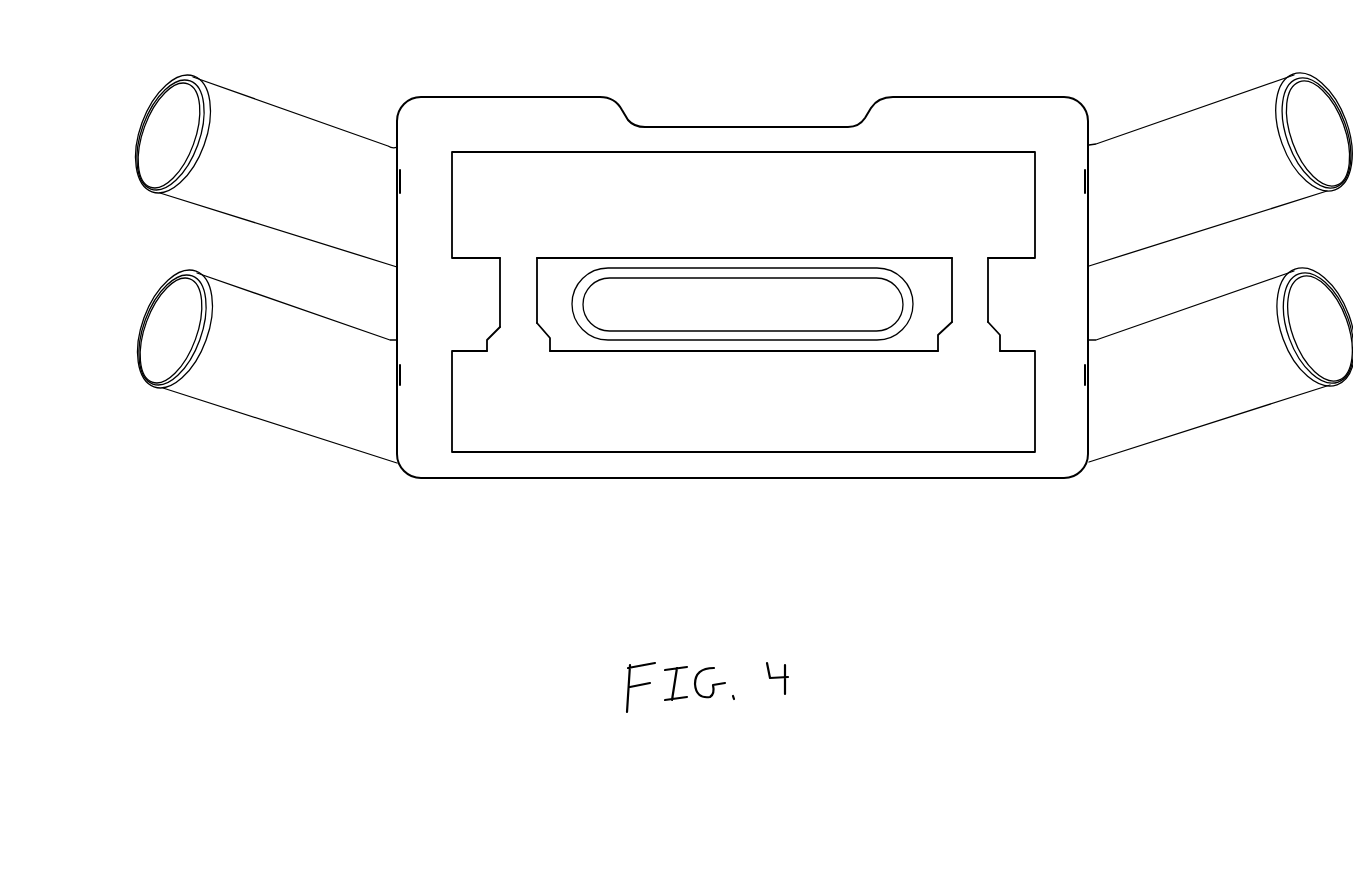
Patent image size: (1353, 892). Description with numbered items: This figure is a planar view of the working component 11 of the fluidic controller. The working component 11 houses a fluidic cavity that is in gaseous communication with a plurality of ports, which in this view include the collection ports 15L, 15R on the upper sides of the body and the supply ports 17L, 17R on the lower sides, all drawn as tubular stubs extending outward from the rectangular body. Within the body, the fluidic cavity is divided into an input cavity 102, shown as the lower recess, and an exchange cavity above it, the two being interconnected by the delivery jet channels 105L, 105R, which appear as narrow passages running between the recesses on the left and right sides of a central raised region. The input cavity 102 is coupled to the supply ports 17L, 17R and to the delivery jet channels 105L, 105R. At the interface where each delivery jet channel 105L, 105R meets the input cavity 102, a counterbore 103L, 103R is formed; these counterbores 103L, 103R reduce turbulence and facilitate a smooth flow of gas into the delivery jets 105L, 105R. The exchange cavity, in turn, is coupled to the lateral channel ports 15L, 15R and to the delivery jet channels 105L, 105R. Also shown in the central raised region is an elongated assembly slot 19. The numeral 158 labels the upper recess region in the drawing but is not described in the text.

The working component 11 is at (939, 125).
The collection port 15L is at (330, 199).
The collection port 15R is at (1207, 189).
The supply port 17L is at (312, 385).
The supply port 17R is at (1205, 402).
The assembly slot 19 is at (806, 317).
The input cavity 102 is at (748, 425).
The counterbore 103L is at (487, 337).
The counterbore 103R is at (947, 337).
The delivery jet channel 105L is at (526, 269).
The delivery jet channel 105R is at (975, 258).
The upper recess 158 is at (746, 188).